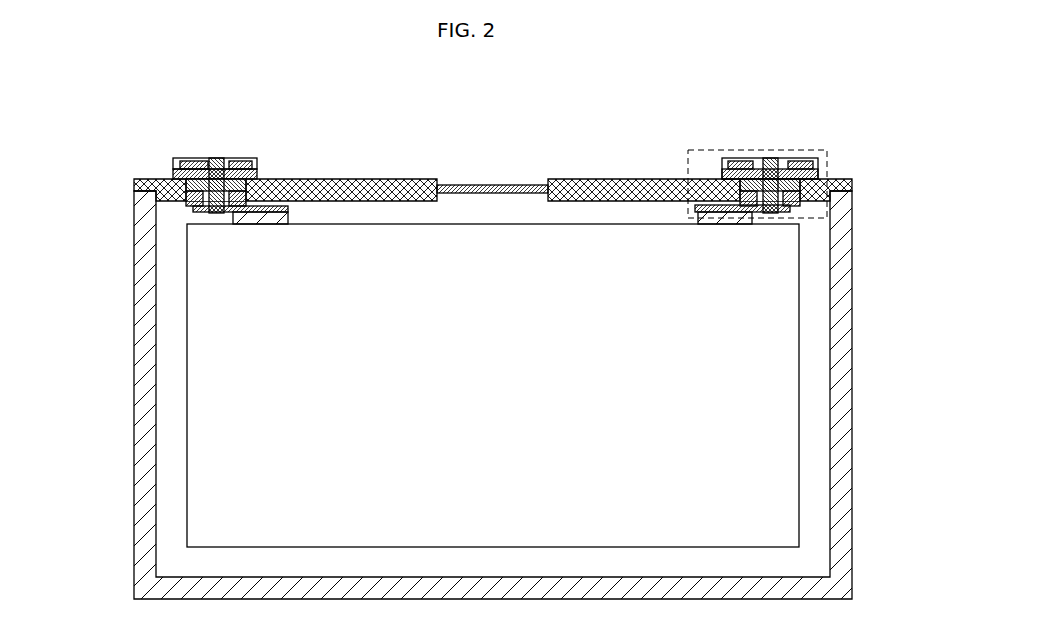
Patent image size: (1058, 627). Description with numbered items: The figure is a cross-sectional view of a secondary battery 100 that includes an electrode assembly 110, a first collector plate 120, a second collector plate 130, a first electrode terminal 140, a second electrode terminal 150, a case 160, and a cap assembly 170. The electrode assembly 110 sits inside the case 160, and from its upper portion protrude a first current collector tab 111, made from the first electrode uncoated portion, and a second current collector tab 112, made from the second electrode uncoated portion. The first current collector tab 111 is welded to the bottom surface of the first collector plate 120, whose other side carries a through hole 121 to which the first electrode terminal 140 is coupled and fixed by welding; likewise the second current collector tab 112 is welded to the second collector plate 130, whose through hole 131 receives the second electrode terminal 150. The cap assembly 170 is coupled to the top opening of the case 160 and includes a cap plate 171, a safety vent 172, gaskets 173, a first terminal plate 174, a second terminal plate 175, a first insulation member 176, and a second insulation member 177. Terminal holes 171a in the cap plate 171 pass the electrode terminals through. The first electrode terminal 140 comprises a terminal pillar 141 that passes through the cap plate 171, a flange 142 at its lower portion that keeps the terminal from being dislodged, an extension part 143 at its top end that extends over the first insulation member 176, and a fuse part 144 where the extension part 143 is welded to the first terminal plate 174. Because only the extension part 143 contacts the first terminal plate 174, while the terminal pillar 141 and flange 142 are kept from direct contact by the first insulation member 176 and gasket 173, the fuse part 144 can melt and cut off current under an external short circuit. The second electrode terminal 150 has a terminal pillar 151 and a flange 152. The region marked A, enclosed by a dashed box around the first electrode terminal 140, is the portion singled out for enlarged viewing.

The secondary battery 100 is at (40, 75).
The electrode assembly 110 is at (803, 467).
The first current collector tab 111 is at (725, 226).
The second current collector tab 112 is at (262, 226).
The first collector plate 120 is at (833, 196).
The through hole 121 is at (775, 208).
The second collector plate 130 is at (198, 200).
The through hole 131 is at (210, 212).
The first electrode terminal 140 is at (813, 146).
The terminal pillar 141 is at (825, 175).
The flange 142 is at (802, 115).
The extension part 143 is at (775, 160).
The fuse part 144 is at (822, 160).
The second electrode terminal 150 is at (137, 154).
The terminal pillar 151 is at (175, 176).
The flange 152 is at (135, 181).
The case 160 is at (843, 373).
The cap assembly 170 is at (478, 146).
The cap plate 171 is at (583, 185).
The terminal hole 171a is at (233, 172).
The safety vent 172 is at (510, 185).
The gasket 173 is at (257, 170).
The first terminal plate 174 is at (742, 168).
The second terminal plate 175 is at (200, 160).
The first insulation member 176 is at (735, 168).
The second insulation member 177 is at (178, 158).
The region A is at (705, 160).